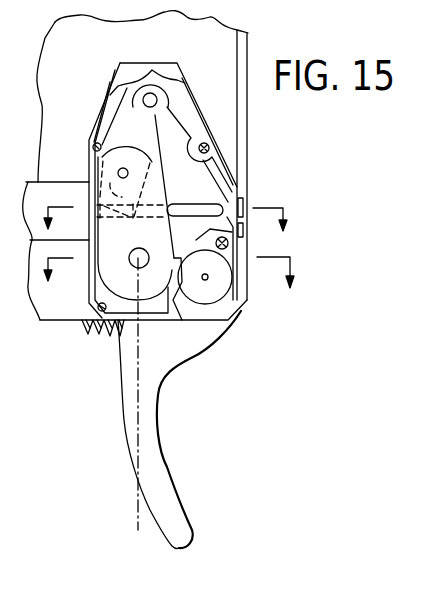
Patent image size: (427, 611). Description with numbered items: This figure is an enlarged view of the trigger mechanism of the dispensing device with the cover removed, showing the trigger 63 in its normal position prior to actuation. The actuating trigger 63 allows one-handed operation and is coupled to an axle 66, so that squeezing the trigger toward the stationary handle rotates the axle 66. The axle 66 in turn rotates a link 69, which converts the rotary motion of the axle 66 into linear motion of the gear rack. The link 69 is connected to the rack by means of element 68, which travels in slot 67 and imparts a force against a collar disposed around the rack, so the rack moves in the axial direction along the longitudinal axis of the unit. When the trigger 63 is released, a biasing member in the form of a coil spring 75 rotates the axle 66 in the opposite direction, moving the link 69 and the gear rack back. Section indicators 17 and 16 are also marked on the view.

The actuating trigger 63 is at (163, 445).
The axle 66 is at (141, 260).
The slot 67 is at (197, 207).
The element 68 is at (105, 180).
The link 69 is at (130, 248).
The coil spring 75 is at (102, 336).
The section line 17 is at (168, 205).
The section line 16 is at (184, 274).